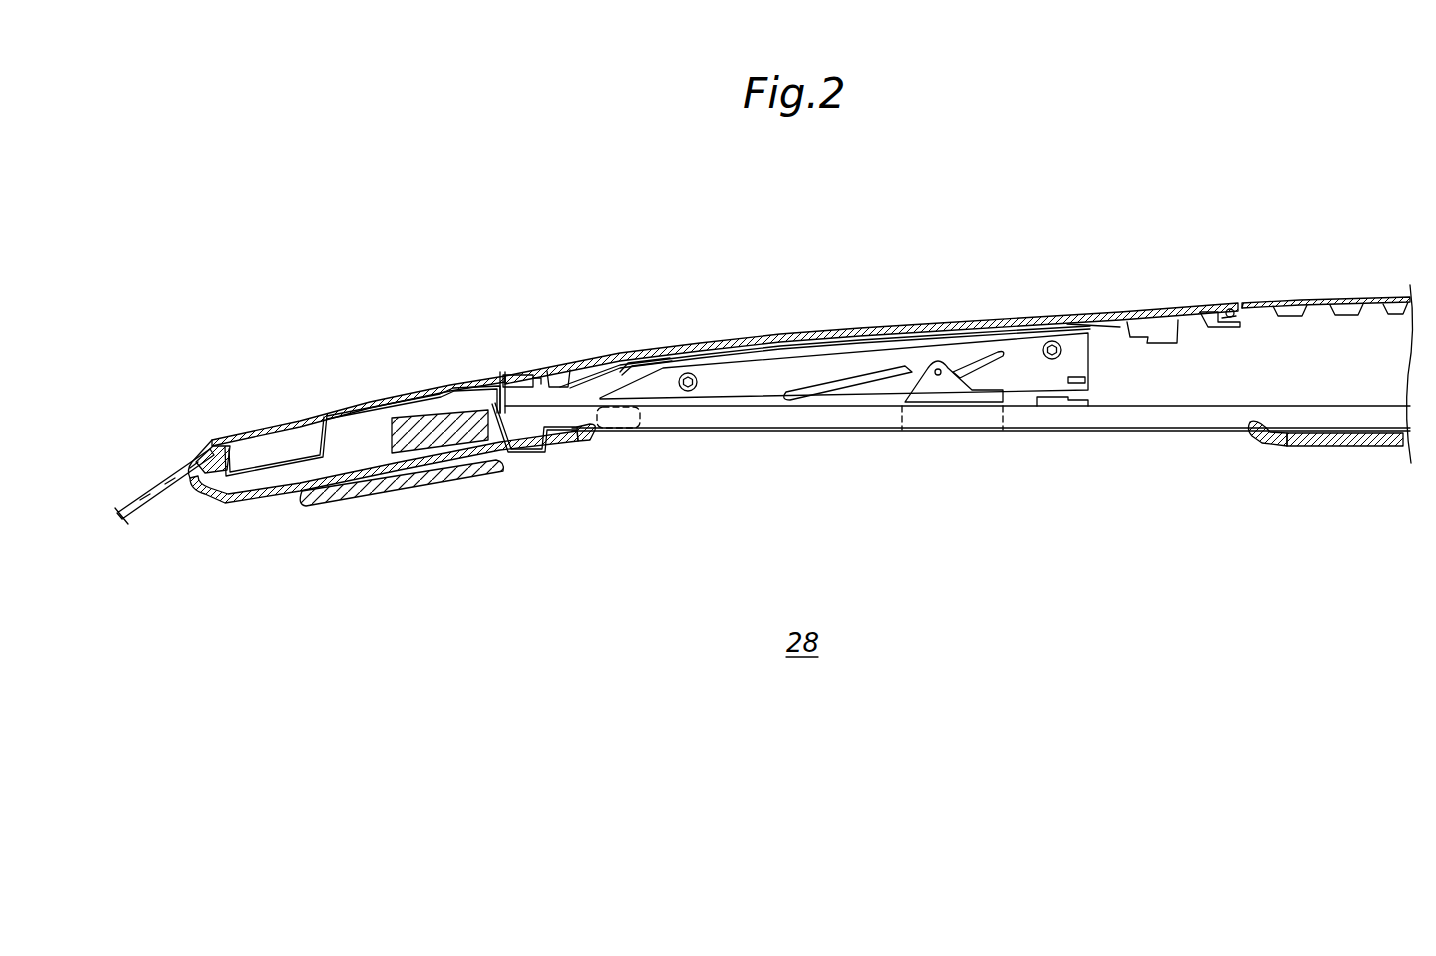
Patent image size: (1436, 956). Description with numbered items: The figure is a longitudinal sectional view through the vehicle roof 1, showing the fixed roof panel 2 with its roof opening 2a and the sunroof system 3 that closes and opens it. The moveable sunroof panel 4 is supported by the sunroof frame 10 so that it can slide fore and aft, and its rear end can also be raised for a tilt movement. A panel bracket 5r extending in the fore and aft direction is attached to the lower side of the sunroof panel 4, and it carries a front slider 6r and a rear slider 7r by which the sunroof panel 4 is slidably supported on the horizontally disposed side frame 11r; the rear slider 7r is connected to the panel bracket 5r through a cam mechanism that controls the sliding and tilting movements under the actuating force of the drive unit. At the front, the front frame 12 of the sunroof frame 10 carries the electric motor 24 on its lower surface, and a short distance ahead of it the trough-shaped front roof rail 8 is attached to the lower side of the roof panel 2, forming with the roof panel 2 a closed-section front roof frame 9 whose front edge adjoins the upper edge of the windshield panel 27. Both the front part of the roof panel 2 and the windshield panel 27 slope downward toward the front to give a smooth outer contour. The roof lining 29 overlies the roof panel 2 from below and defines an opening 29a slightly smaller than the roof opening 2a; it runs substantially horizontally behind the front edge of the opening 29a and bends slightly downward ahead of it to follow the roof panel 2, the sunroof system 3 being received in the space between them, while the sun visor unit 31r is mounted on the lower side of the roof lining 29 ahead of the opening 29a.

The vehicle roof 1 is at (1168, 195).
The fixed roof panel 2 is at (372, 398).
The roof opening 2a is at (515, 372).
The sunroof system 3 is at (822, 282).
The sunroof panel 4 is at (1027, 313).
The panel bracket 5r is at (750, 376).
The front slider 6r is at (620, 428).
The rear slider 7r is at (945, 425).
The front roof rail 8 is at (325, 437).
The front roof frame 9 is at (268, 425).
The sunroof frame 10 is at (738, 447).
The side frame 11r is at (1090, 426).
The front frame 12 is at (547, 470).
The electric motor 24 is at (430, 418).
The windshield panel 27 is at (157, 482).
The roof lining 29 is at (250, 505).
The opening 29a is at (592, 441).
The sun visor unit 31r is at (395, 506).